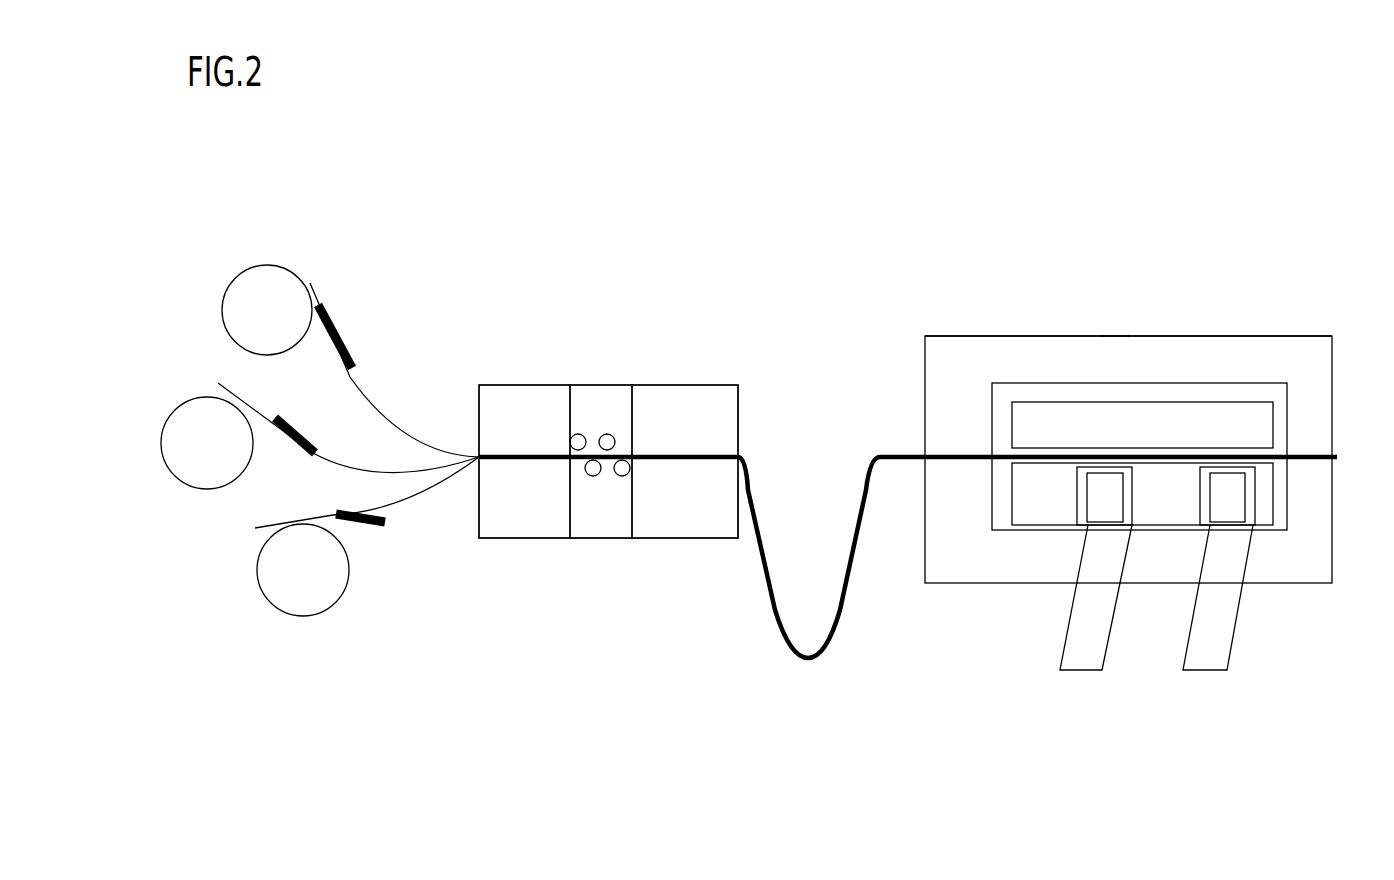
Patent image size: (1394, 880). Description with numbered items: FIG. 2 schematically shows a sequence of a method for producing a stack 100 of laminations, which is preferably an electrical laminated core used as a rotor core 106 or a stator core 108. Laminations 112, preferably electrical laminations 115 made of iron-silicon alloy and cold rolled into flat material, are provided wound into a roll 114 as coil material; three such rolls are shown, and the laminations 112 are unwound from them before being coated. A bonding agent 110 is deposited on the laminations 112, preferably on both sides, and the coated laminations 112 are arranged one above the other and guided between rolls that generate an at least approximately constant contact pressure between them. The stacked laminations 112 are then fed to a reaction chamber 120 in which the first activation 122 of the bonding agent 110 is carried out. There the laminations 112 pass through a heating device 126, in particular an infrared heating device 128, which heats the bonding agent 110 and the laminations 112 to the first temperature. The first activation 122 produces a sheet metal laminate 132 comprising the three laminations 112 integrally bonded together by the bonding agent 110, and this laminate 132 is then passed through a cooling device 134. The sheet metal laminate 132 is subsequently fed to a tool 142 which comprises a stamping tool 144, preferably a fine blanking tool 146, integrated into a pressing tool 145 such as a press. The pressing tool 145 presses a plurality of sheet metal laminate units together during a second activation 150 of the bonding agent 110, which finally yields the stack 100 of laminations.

The stack of laminations 100 is at (1141, 618).
The rotor core 106 is at (1090, 665).
The stator core 108 is at (1213, 662).
The bonding agent 110 is at (340, 337).
The lamination 112 is at (315, 280).
The roll 114 is at (255, 440).
The electrical lamination 115 is at (236, 455).
The reaction chamber 120 is at (876, 479).
The first activation 122 is at (568, 378).
The heating device 126 is at (503, 418).
The infrared heating device 128 is at (505, 495).
The sheet metal laminate 132 is at (655, 465).
The cooling device 134 is at (663, 412).
The tool 142 is at (1130, 490).
The stamping tool 144 is at (1167, 378).
The pressing tool 145 is at (1035, 315).
The fine blanking tool 146 is at (1238, 378).
The second activation 150 is at (1112, 318).